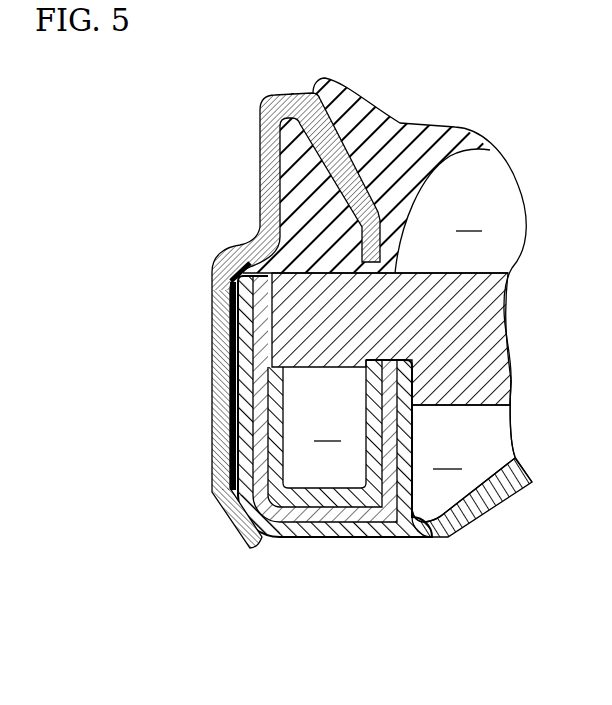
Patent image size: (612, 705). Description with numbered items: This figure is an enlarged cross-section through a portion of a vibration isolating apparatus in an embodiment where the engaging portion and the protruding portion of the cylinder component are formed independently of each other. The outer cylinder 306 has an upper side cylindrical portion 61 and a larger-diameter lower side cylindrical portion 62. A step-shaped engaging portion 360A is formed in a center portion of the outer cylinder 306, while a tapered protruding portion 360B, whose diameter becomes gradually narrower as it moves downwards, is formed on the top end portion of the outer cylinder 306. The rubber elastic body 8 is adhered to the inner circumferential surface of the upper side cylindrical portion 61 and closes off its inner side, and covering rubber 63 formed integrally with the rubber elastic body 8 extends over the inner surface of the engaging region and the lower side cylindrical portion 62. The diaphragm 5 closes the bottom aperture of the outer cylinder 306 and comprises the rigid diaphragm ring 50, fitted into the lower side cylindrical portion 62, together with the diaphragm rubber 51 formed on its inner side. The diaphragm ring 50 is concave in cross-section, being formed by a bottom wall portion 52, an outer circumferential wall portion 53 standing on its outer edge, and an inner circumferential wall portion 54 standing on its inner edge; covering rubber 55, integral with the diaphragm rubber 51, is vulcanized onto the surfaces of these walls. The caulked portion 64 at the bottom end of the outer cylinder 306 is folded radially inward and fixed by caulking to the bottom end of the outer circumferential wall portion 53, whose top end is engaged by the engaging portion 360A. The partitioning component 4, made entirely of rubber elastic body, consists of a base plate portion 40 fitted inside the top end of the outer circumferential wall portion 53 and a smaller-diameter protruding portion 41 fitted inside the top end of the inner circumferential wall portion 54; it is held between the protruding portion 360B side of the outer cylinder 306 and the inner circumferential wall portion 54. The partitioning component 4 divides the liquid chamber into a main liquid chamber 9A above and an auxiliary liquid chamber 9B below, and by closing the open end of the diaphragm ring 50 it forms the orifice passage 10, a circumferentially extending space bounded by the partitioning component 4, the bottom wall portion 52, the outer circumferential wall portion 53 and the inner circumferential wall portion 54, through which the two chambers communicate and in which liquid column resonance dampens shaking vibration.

The partitioning component 4 is at (408, 320).
The diaphragm 5 is at (343, 474).
The rubber elastic body 8 is at (259, 319).
The main liquid chamber 9A is at (442, 211).
The auxiliary liquid chamber 9B is at (463, 482).
The orifice passage 10 is at (324, 424).
The base plate portion 40 is at (418, 293).
The protruding portion 41 is at (481, 405).
The diaphragm ring 50 is at (304, 452).
The diaphragm rubber 51 is at (477, 524).
The bottom wall portion 52 is at (330, 517).
The outer circumferential wall portion 53 is at (262, 386).
The inner circumferential wall portion 54 is at (392, 450).
The covering rubber 55 is at (274, 440).
The upper side cylindrical portion 61 is at (270, 128).
The lower side cylindrical portion 62 is at (222, 338).
The covering rubber 63 is at (236, 300).
The caulked portion 64 is at (235, 526).
The outer cylinder 306 is at (246, 319).
The step-shaped engaging portion 360A is at (230, 242).
The tapered protruding portion 360B is at (338, 150).